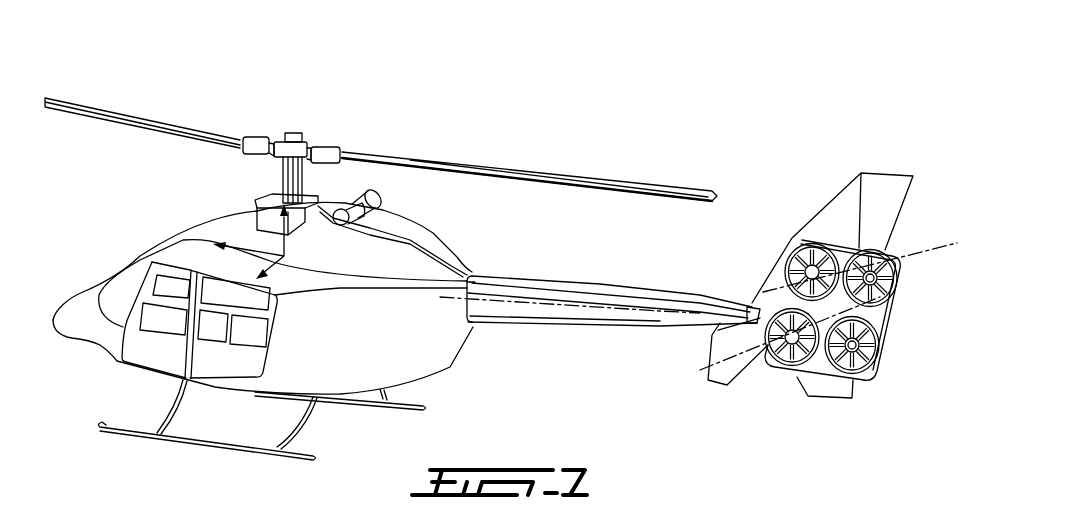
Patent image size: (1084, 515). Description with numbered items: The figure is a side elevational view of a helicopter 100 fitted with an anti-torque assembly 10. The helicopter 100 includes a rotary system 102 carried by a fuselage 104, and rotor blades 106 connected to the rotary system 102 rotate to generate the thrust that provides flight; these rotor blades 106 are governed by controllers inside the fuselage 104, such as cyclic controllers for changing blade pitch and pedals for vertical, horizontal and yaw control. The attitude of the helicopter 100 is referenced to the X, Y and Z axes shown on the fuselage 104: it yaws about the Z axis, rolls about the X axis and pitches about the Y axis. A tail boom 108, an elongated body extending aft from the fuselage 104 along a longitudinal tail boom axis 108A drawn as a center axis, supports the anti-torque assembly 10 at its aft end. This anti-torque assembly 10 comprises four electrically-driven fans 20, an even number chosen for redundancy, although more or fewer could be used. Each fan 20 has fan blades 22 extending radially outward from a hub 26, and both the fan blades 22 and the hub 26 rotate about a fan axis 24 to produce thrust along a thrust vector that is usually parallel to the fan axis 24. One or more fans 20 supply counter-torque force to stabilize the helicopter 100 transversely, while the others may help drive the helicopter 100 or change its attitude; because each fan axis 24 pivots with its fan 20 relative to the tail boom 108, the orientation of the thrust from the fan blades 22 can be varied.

The helicopter 100 is at (630, 114).
The rotary system 102 is at (278, 128).
The fuselage 104 is at (86, 357).
The rotor blades 106 is at (517, 177).
The tail boom 108 is at (586, 325).
The longitudinal tail boom axis 108A is at (490, 303).
The anti-torque assembly 10 is at (799, 182).
The electrically-driven fans 20 is at (780, 242).
The fan blades 22 is at (894, 290).
The fan axis 24 is at (742, 300).
The hub 26 is at (866, 171).